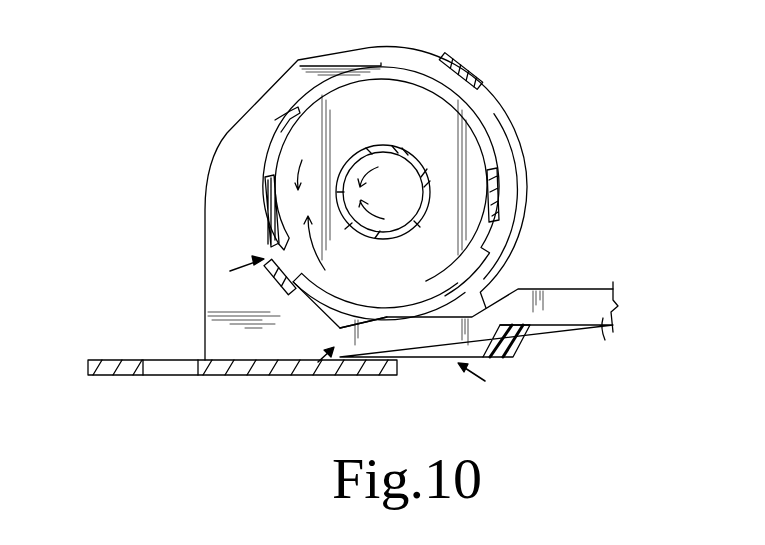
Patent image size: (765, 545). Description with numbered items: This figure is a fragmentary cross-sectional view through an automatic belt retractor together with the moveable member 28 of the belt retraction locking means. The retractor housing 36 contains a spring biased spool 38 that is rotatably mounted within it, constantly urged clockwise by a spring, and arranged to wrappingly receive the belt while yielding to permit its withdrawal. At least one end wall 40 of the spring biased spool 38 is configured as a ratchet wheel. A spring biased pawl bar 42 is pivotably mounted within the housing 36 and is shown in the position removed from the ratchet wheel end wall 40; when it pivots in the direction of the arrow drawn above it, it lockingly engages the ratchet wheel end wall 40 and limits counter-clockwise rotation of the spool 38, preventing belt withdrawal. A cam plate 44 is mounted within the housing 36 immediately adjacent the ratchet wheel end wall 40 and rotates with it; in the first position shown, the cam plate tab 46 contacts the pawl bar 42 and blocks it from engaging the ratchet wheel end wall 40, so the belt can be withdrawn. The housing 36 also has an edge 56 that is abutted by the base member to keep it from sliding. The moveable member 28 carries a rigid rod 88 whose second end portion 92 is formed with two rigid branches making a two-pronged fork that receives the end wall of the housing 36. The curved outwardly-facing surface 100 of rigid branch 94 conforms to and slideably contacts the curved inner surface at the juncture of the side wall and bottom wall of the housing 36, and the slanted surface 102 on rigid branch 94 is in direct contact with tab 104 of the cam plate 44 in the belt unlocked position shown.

The moveable member 28 is at (584, 258).
The housing 36 is at (318, 72).
The spring biased spool 38 is at (408, 178).
The ratchet wheel end wall 40 is at (403, 72).
The pawl bar 42 is at (268, 275).
The cam plate 44 is at (307, 112).
The cam plate tab 46 is at (290, 262).
The edge of housing 56 is at (398, 371).
The rigid rod 88 is at (614, 340).
The second end portion 92 is at (318, 365).
The rigid branch 94 is at (482, 380).
The curved outwardly-facing surface 100 is at (377, 350).
The slanted surface 102 is at (342, 327).
The tab of cam plate 104 is at (377, 310).